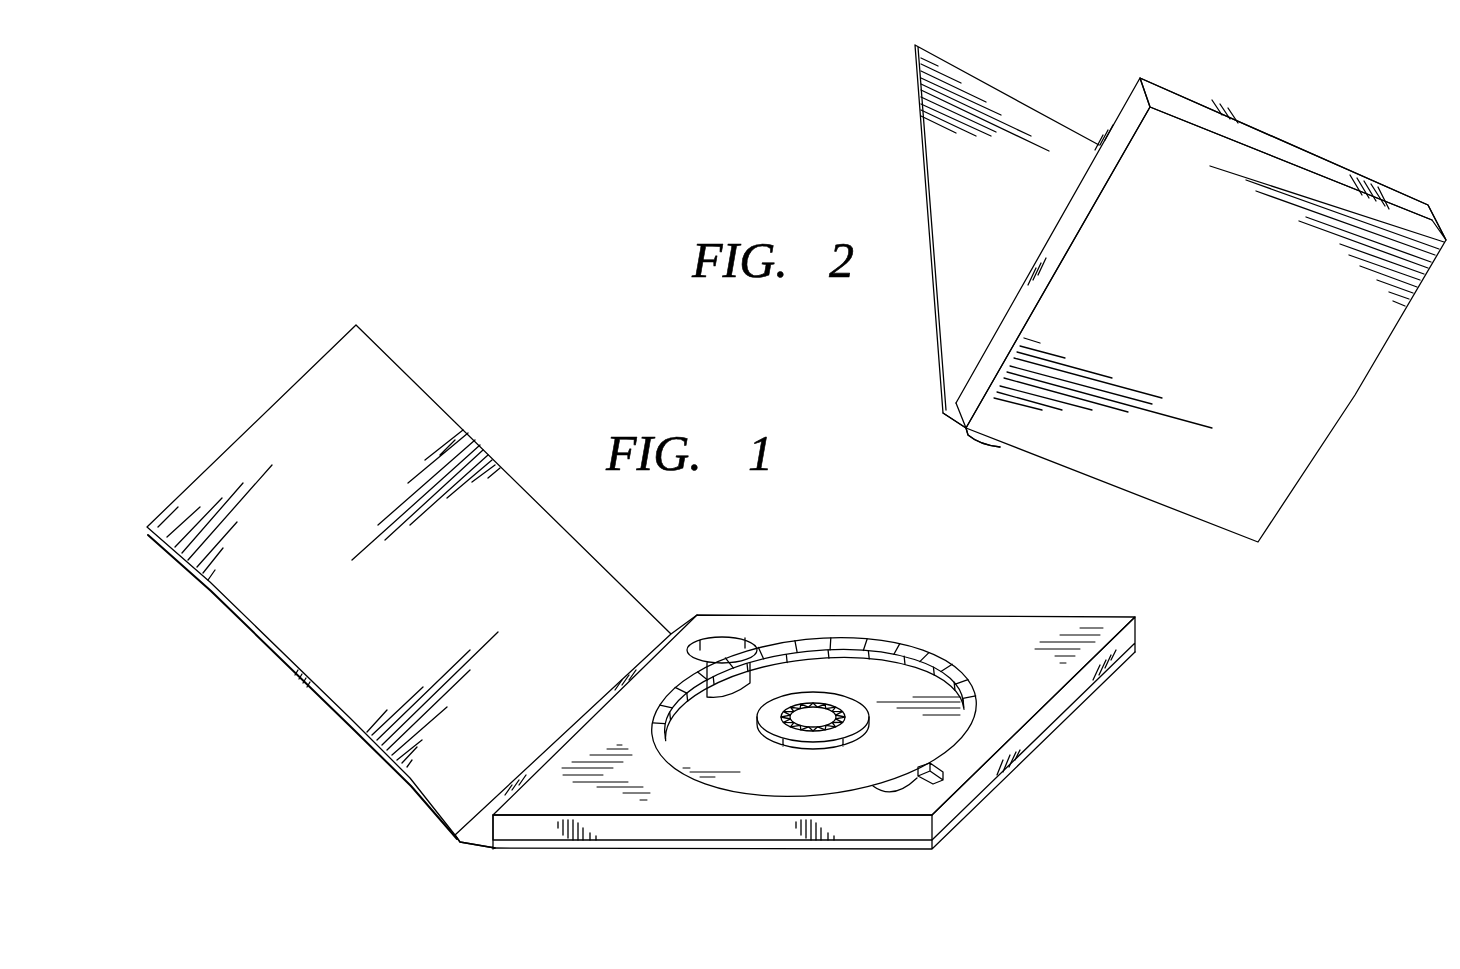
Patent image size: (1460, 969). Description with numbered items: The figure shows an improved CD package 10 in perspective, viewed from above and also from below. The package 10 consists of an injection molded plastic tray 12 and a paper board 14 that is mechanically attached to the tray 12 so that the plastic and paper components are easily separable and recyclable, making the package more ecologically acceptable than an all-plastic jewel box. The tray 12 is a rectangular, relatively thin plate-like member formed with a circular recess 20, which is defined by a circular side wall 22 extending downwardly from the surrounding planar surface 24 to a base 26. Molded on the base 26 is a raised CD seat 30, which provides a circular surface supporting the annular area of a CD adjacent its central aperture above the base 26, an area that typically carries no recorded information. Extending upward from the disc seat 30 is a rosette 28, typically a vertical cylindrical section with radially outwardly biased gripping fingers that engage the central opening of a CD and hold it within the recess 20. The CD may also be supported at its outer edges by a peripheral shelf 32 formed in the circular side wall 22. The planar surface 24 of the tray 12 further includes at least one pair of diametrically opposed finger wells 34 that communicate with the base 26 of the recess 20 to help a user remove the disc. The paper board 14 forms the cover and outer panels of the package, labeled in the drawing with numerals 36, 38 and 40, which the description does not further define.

In FIG. 1, the CD package 10 is at (912, 540).
In FIG. 1, the tray 12 is at (1072, 686).
In FIG. 1, the paper board 14 is at (810, 843).
In FIG. 2, the paper board 14 is at (1085, 450).
In FIG. 1, the circular recess 20 is at (903, 723).
In FIG. 1, the circular side wall 22 is at (898, 648).
In FIG. 1, the planar surface 24 is at (1057, 640).
In FIG. 1, the base 26 is at (705, 755).
In FIG. 1, the rosette 28 is at (810, 694).
In FIG. 1, the raised CD seat 30 is at (807, 745).
In FIG. 1, the peripheral shelf 32 is at (960, 667).
In FIG. 1, the finger wells 34 is at (727, 640).
In FIG. 1, the lid 36 is at (655, 828).
In FIG. 2, the lid 36 is at (1058, 242).
In FIG. 1, the base 38 is at (780, 615).
In FIG. 2, the base 38 is at (1376, 370).
In FIG. 1, the side wall 40 is at (972, 787).
In FIG. 2, the side wall 40 is at (1283, 144).